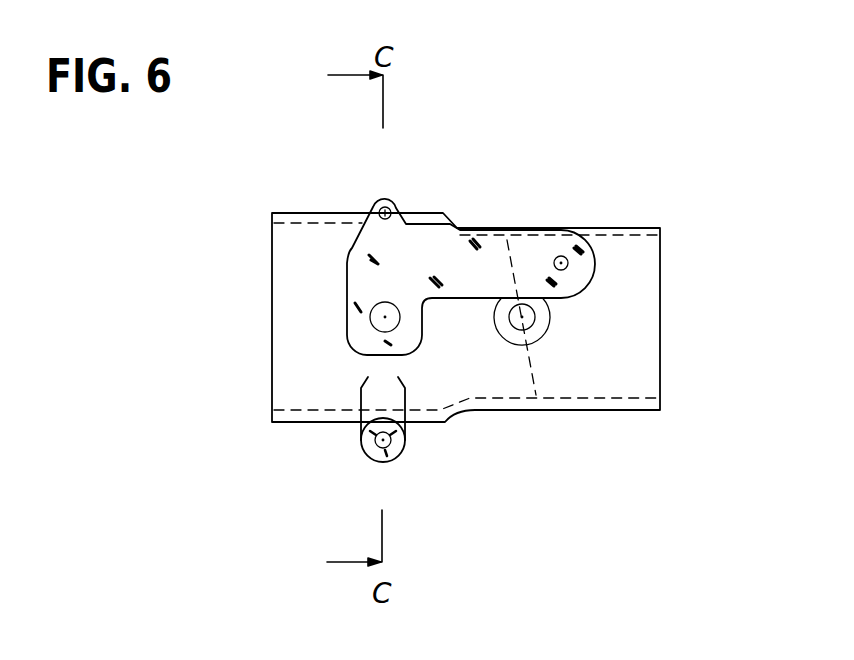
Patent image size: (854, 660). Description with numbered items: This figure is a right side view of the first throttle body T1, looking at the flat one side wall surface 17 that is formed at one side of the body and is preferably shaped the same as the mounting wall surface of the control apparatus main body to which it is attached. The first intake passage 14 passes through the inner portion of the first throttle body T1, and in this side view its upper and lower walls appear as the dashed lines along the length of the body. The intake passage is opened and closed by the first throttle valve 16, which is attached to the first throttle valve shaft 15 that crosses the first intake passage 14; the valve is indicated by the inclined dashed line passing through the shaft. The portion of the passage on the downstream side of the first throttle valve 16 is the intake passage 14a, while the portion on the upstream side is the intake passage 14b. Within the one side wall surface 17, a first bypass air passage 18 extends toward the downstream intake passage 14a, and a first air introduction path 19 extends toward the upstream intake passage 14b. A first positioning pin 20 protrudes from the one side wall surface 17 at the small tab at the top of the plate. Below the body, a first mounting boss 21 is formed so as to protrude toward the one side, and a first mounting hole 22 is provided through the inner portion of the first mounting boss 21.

The first throttle body T1 is at (645, 226).
The first intake passage 14 is at (640, 293).
The intake passage at downstream side 14a is at (526, 347).
The intake passage at upstream side 14b is at (297, 283).
The first throttle valve shaft 15 is at (535, 326).
The first throttle valve 16 is at (540, 371).
The one side wall surface 17 is at (458, 240).
The first bypass air passage 18 is at (567, 255).
The first air introduction path 19 is at (370, 324).
The first positioning pin 20 is at (383, 203).
The first mounting boss 21 is at (392, 460).
The first mounting hole 22 is at (367, 451).